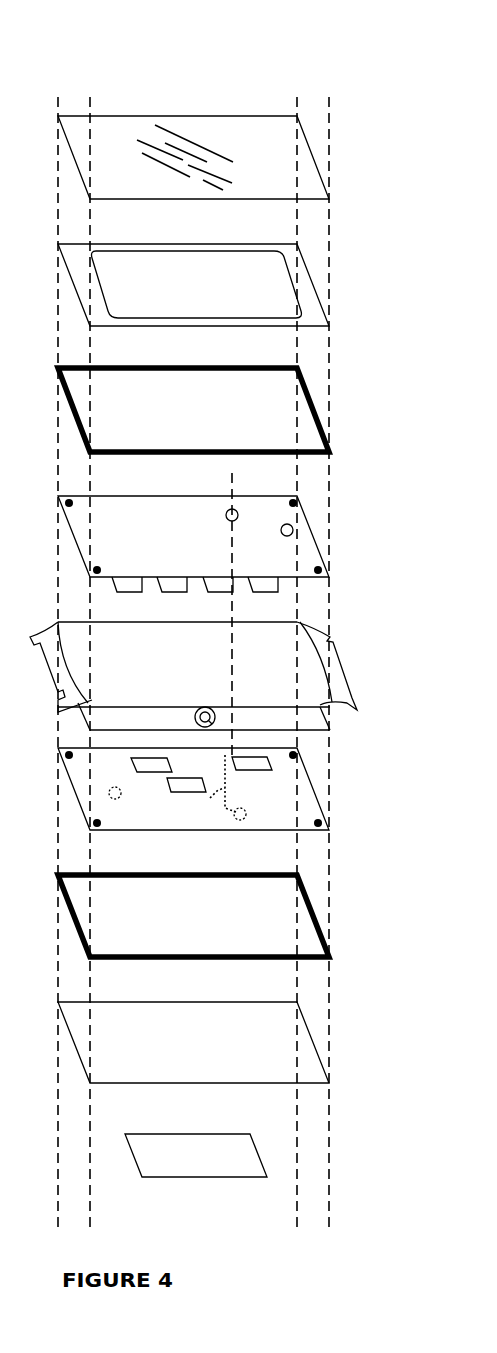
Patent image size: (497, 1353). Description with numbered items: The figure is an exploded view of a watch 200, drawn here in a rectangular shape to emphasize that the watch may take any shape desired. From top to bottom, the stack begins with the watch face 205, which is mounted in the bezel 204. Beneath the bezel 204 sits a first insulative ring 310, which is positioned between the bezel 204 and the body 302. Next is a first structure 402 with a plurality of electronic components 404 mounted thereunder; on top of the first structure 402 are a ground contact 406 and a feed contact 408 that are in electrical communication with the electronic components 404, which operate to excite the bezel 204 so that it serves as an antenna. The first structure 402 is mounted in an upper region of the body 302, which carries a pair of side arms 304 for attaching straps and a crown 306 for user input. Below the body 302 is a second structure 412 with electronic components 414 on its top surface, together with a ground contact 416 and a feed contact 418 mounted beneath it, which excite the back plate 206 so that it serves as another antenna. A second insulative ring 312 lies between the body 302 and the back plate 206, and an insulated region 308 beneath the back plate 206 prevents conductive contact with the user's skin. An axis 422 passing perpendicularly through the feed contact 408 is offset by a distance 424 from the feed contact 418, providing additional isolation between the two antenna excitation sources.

The watch 200 is at (329, 58).
The watch face 205 is at (303, 137).
The bezel 204 is at (315, 283).
The first insulative ring 310 is at (315, 395).
The axis 422 is at (232, 473).
The first structure 402 is at (313, 538).
The feed contact 408 is at (227, 512).
The ground contact 406 is at (282, 535).
The electronic components 404 is at (258, 592).
The body 302 is at (272, 623).
The side arms 304 is at (87, 703).
The crown 306 is at (212, 711).
The second structure 412 is at (320, 810).
The electronic components 414 is at (201, 774).
The ground contact 416 is at (122, 798).
The feed contact 418 is at (247, 813).
The distance 424 is at (209, 788).
The second insulative ring 312 is at (313, 907).
The back plate 206 is at (313, 1043).
The insulated region 308 is at (260, 1160).